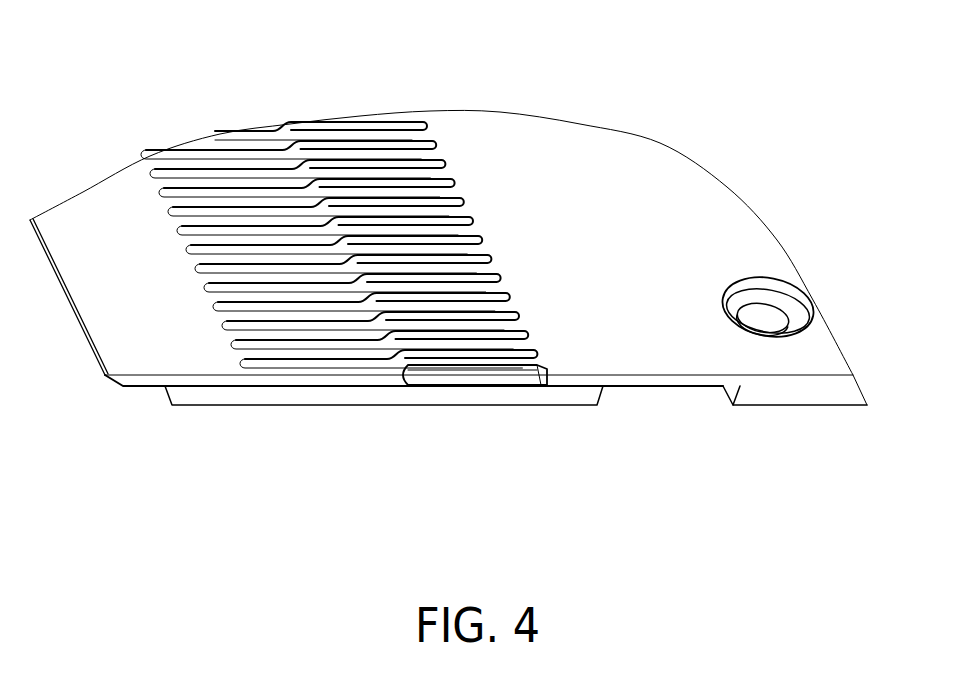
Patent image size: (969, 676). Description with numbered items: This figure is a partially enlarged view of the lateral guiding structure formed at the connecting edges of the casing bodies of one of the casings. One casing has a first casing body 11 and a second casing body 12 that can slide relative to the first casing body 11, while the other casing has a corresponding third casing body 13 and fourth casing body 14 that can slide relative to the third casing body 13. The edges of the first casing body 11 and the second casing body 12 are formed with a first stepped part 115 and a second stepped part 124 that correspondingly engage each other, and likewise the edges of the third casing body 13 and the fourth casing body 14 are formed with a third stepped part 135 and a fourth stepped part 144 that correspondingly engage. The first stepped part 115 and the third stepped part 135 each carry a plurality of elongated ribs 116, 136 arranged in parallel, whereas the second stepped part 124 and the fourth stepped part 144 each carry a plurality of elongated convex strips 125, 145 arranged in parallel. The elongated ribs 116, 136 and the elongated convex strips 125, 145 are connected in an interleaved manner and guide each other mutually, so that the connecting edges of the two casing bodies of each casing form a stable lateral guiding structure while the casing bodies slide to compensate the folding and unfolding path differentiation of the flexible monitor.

The second casing body 12 is at (448, 249).
The fourth casing body 14 is at (682, 207).
The first casing body 11 is at (370, 440).
The third casing body 13 is at (223, 390).
The elongated ribs 116 is at (343, 197).
The elongated ribs 136 is at (343, 197).
The elongated convex strips 125 is at (356, 204).
The elongated convex strips 145 is at (437, 153).
The first stepped part 115 is at (495, 428).
The third stepped part 135 is at (417, 380).
The second stepped part 124 is at (768, 438).
The fourth stepped part 144 is at (724, 387).